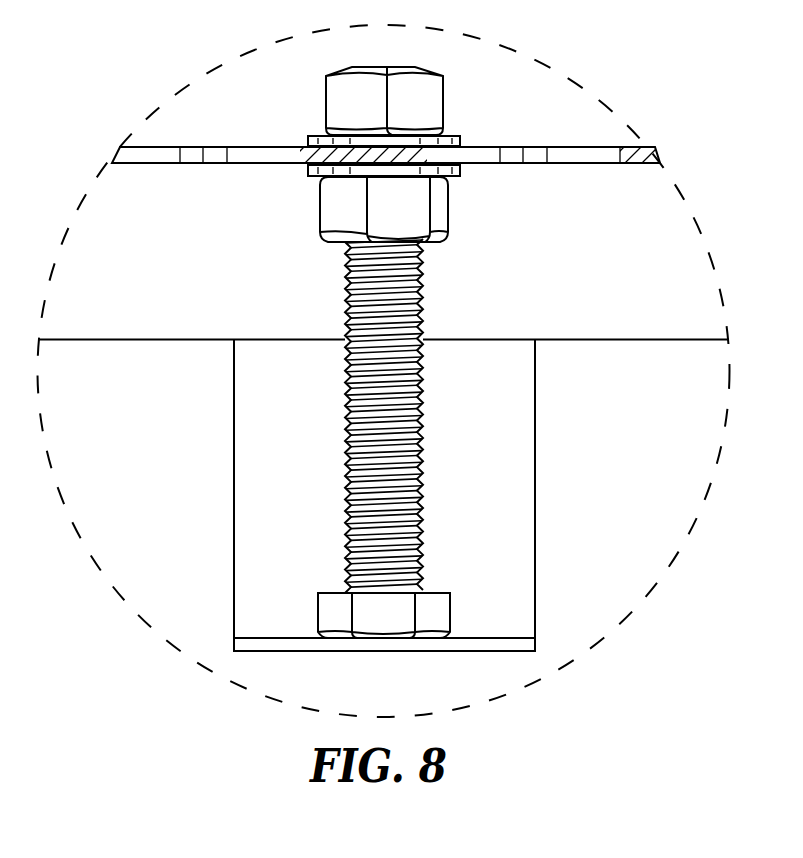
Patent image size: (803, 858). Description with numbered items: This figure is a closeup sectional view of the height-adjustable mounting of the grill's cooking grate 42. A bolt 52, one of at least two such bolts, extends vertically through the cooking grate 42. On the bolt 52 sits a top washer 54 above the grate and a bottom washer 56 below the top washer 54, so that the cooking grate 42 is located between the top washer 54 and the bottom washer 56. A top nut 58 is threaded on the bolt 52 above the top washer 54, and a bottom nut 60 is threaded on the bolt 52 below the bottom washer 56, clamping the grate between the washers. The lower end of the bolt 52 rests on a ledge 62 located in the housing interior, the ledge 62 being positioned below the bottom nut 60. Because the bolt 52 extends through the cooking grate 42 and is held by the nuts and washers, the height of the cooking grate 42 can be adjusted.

The cooking grate 42 is at (597, 157).
The bolt 52 is at (345, 265).
The top washer 54 is at (460, 140).
The bottom washer 56 is at (460, 170).
The top nut 58 is at (443, 93).
The bottom nut 60 is at (448, 228).
The ledge 62 is at (370, 651).